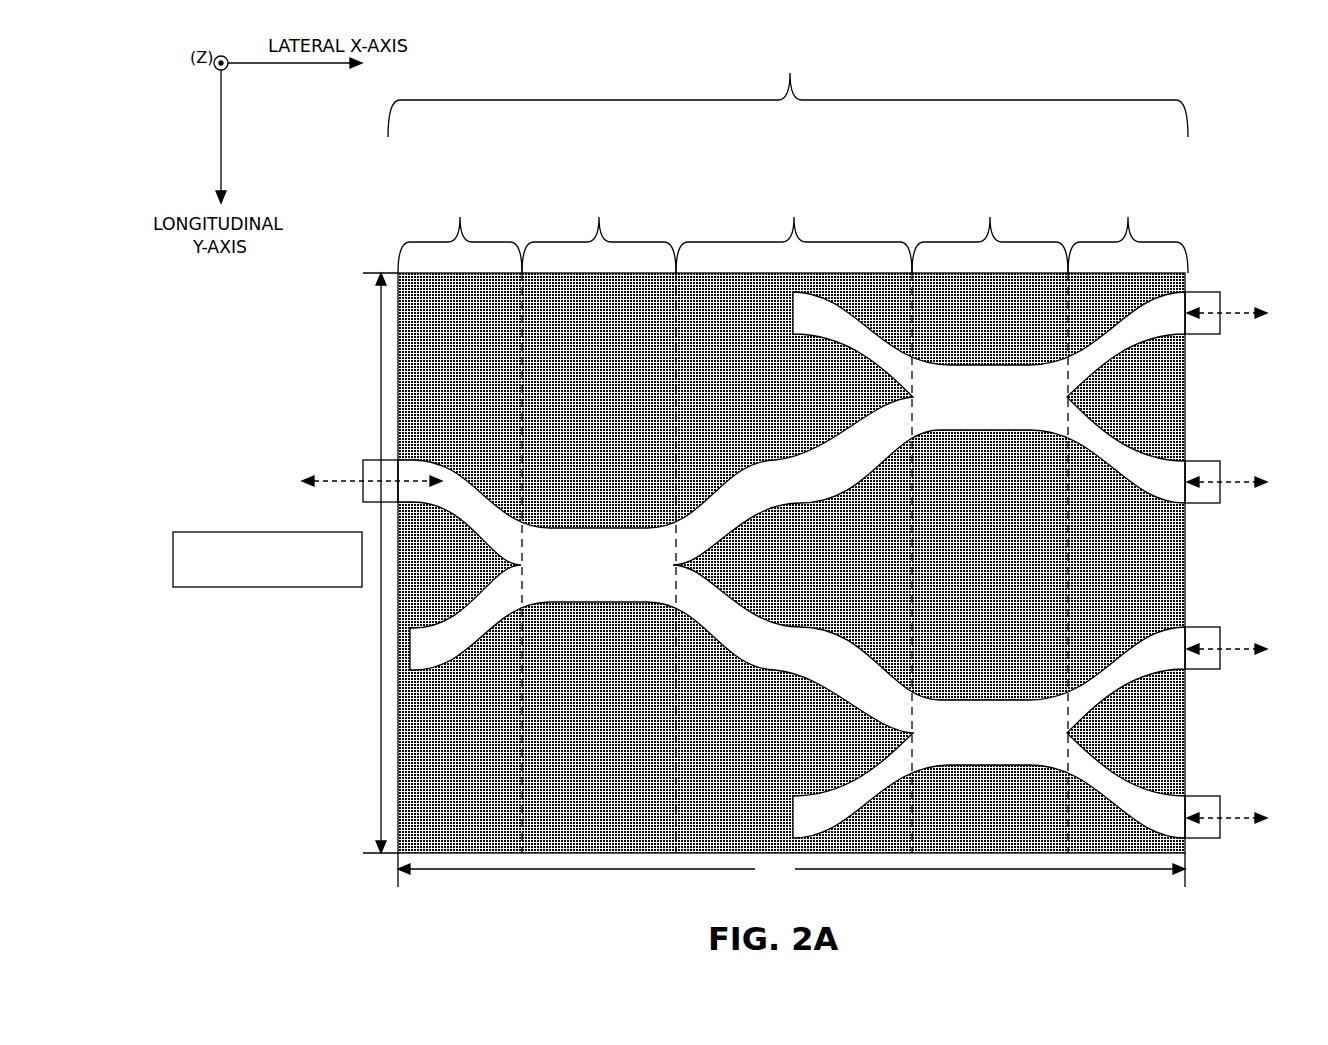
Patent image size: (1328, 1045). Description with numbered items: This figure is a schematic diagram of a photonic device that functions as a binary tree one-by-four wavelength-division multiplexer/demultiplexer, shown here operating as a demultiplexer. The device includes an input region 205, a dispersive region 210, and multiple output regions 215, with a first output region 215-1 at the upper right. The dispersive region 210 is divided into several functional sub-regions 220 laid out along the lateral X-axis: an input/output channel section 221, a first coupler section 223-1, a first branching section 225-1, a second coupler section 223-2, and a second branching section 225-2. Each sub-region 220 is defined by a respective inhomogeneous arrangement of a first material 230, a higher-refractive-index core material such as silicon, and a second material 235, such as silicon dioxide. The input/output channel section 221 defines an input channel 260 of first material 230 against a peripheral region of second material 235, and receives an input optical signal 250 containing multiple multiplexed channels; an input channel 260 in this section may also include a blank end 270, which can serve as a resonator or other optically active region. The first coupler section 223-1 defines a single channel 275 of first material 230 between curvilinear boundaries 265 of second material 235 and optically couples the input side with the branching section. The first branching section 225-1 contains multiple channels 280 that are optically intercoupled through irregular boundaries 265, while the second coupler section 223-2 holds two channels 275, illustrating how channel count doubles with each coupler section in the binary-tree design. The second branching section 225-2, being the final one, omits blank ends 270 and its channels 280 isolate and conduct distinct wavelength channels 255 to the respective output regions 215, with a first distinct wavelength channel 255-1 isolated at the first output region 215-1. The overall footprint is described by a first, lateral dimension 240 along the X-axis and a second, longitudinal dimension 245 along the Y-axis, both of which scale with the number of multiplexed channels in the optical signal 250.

The input region 205 is at (367, 475).
The dispersive region 210 is at (1190, 572).
The output regions 215 is at (1208, 470).
The first output region 215-1 is at (1205, 292).
The sub-regions 220 is at (788, 95).
The input/output channel section 221 is at (460, 212).
The first coupler section 223-1 is at (603, 218).
The second coupler section 223-2 is at (990, 218).
The first branching section 225-1 is at (794, 218).
The second branching section 225-2 is at (1133, 218).
The first material 230 is at (791, 565).
The second material 235 is at (788, 554).
The first lateral dimension 240 is at (791, 870).
The second longitudinal dimension 245 is at (380, 740).
The input optical signal 250 is at (352, 485).
The distinct wavelength channels 255 is at (1235, 478).
The first distinct wavelength channel 255-1 is at (1232, 305).
The input channel 260 is at (478, 497).
The boundaries 265 is at (445, 625).
The blank ends 270 is at (425, 665).
The channels 275 is at (625, 590).
The channels 280 is at (848, 343).